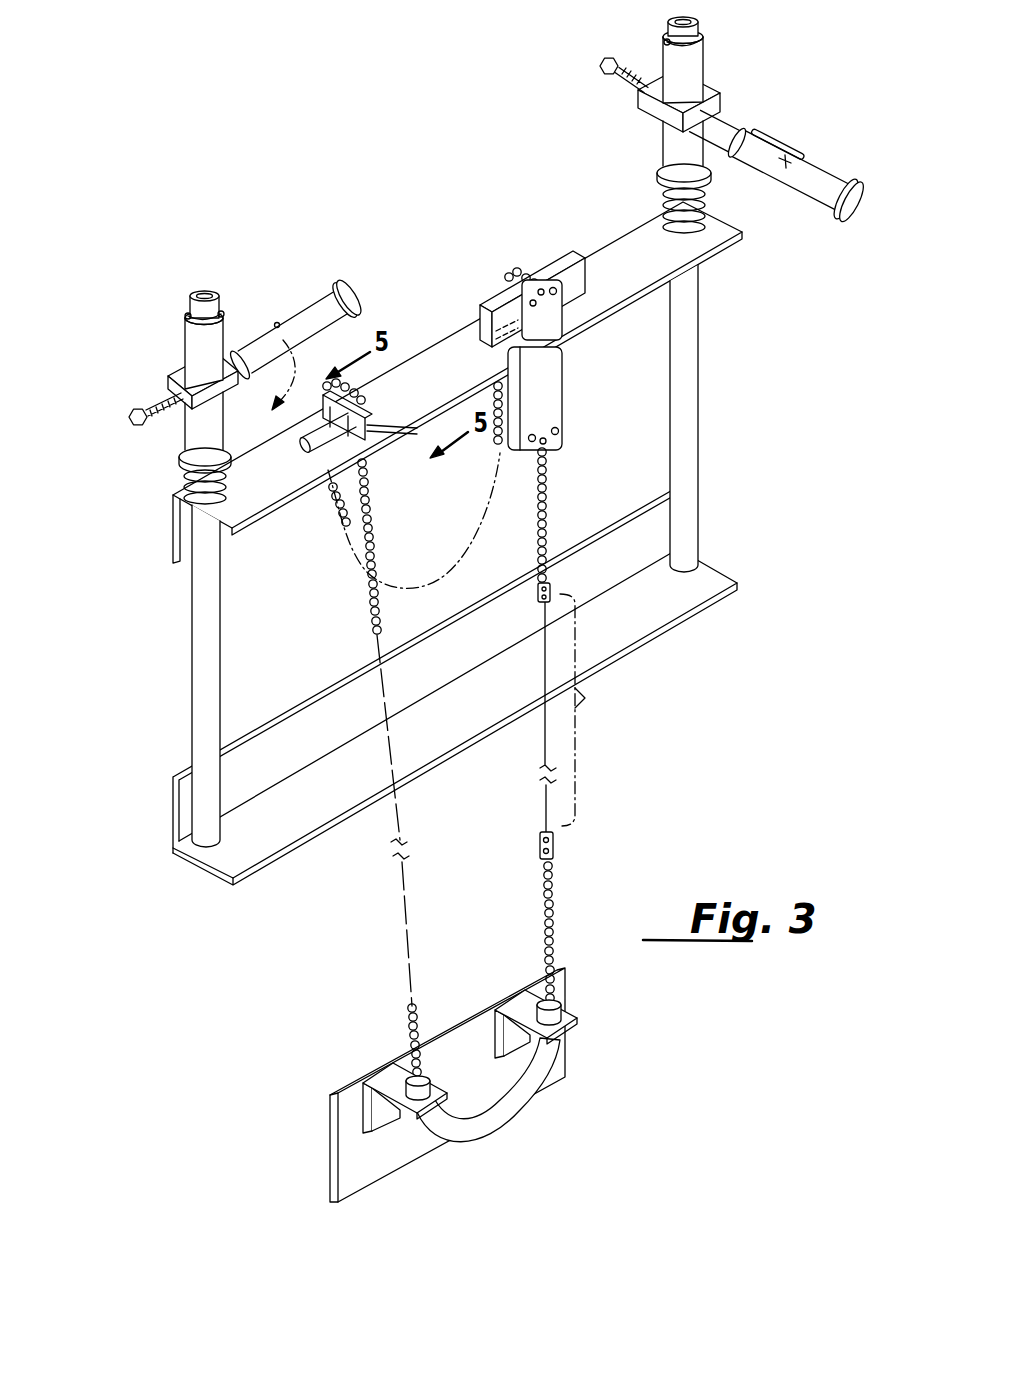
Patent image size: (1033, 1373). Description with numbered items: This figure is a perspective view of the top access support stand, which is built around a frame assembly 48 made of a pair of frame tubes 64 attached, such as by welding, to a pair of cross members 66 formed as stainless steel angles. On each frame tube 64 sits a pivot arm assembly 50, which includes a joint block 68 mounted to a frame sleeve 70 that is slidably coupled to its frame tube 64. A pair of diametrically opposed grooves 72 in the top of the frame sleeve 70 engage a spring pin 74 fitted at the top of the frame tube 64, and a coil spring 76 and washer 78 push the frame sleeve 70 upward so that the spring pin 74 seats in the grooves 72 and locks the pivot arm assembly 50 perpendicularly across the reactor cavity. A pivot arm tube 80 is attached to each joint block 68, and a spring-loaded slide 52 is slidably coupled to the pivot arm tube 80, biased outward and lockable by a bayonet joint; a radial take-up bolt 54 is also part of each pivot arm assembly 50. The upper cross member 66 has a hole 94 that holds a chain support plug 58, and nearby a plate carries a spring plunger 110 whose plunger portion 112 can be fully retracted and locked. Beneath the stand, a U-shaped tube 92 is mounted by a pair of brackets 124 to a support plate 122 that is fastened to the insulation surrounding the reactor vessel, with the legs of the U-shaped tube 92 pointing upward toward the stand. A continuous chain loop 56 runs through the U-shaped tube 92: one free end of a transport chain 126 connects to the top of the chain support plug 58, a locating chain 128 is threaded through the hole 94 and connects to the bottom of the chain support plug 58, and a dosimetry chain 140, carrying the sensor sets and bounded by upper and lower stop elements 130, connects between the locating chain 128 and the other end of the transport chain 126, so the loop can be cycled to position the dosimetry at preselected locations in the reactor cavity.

The frame assembly 48 is at (282, 684).
The pivot arm assembly 50 is at (155, 356).
The spring-loaded slide 52 is at (822, 175).
The radial take-up bolt 54 is at (600, 65).
The continuous chain loop 56 is at (360, 949).
The chain support plug 58 is at (566, 256).
The frame tube 64 is at (690, 392).
The cross member 66 is at (700, 243).
The joint block 68 is at (656, 108).
The frame sleeve 70 is at (690, 68).
The groove 72 is at (220, 316).
The spring pin 74 is at (665, 42).
The coil spring 76 is at (662, 208).
The washer 78 is at (706, 176).
The pivot arm tube 80 is at (728, 128).
The U-shaped tube 92 is at (525, 1108).
The hole 94 is at (575, 315).
The spring plunger 110 is at (322, 463).
The plunger portion 112 is at (370, 400).
The support plate 122 is at (355, 1125).
The bracket 124 is at (400, 1065).
The transport chain 126 is at (402, 893).
The locating chain 128 is at (555, 478).
The stop element 130 is at (553, 590).
The dosimetry chain 140 is at (593, 710).